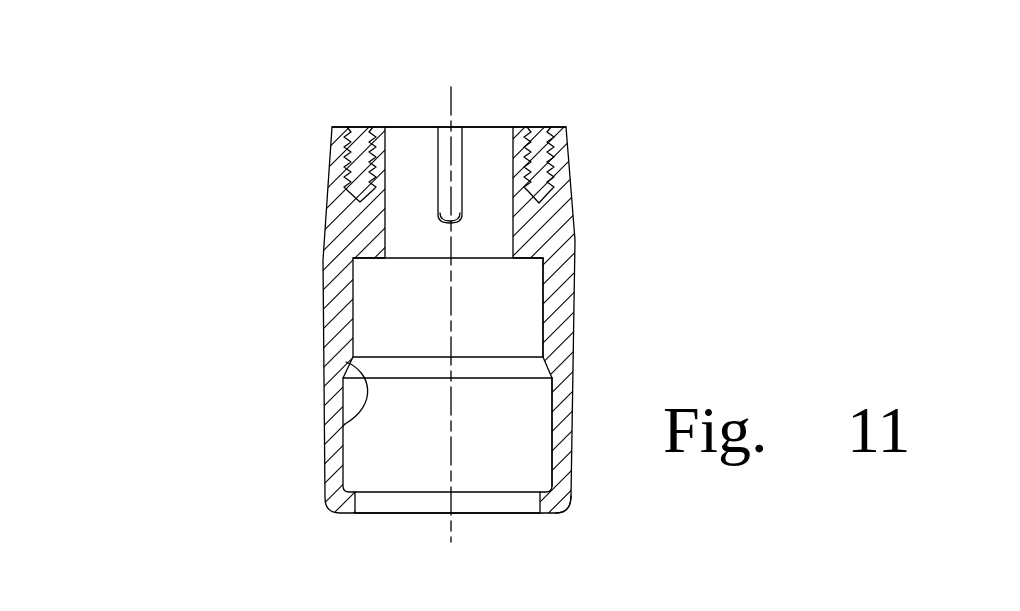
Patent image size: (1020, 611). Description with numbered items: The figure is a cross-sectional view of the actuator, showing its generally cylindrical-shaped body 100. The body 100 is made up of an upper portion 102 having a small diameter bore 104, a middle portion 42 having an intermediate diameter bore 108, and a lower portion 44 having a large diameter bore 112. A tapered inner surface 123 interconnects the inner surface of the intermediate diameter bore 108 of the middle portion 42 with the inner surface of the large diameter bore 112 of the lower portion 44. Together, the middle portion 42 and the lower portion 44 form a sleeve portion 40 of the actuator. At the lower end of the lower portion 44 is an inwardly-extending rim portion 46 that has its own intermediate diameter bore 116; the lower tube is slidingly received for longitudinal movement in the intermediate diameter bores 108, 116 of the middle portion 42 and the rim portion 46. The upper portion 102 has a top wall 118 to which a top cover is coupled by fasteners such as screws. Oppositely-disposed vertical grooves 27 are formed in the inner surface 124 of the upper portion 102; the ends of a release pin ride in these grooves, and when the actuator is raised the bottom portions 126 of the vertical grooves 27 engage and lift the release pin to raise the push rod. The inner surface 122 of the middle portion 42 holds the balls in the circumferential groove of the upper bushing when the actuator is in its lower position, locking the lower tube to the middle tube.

The sleeve portion 40 is at (175, 507).
The vertical grooves 27 is at (453, 163).
The middle portion 42 is at (575, 285).
The lower portion 44 is at (572, 420).
The rim portion 46 is at (555, 507).
The body 100 is at (205, 387).
The upper portion 102 is at (572, 168).
The small diameter bore 104 is at (482, 227).
The intermediate diameter bore 108 is at (510, 335).
The large diameter bore 112 is at (515, 467).
The intermediate diameter bore 116 is at (488, 503).
The top wall 118 is at (376, 126).
The inner surface 122 is at (211, 298).
The tapered inner surface 123 is at (236, 437).
The inner surface 124 is at (213, 148).
The bottom portions 126 is at (211, 228).